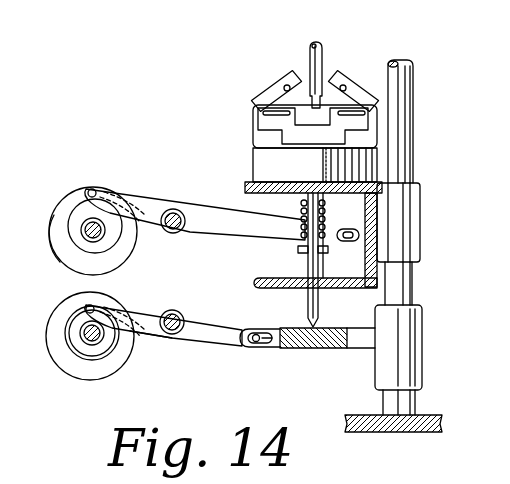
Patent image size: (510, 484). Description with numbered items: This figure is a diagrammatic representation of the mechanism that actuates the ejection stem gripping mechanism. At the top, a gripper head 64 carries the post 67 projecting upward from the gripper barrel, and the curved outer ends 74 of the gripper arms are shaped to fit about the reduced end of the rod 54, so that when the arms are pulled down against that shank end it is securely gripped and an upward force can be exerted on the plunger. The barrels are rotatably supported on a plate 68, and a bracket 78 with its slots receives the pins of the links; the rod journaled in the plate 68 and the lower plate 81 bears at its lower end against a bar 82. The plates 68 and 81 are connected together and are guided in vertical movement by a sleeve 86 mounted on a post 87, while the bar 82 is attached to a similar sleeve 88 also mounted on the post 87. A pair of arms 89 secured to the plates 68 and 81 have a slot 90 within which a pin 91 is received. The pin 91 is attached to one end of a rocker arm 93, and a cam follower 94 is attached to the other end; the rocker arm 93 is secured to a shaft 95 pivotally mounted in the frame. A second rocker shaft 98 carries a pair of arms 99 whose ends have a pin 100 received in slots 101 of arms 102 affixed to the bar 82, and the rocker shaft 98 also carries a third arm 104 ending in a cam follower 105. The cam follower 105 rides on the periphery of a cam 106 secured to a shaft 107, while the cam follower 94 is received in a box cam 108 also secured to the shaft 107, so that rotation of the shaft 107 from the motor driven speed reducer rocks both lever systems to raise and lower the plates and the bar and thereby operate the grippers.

The rod 54 is at (323, 58).
The gripper head 64 is at (266, 88).
The post 67 is at (254, 138).
The plate 68 is at (246, 186).
The outer end of arm 74 is at (297, 74).
The bracket 78 is at (348, 123).
The plate 81 is at (255, 283).
The bar 82 is at (330, 349).
The sleeve 86 is at (420, 237).
The post 87 is at (413, 282).
The sleeve 88 is at (423, 346).
The arm 89 is at (360, 230).
The slot 90 is at (348, 242).
The pin 91 is at (345, 229).
The rocker arm 93 is at (151, 206).
The cam follower 94 is at (94, 189).
The shaft 95 is at (170, 233).
The second rocker shaft 98 is at (170, 311).
The arm 99 is at (198, 341).
The pin 100 is at (263, 329).
The slot 101 is at (252, 346).
The arm 102 is at (273, 348).
The third arm 104 is at (147, 333).
The cam follower 105 is at (86, 305).
The cam 106 is at (68, 372).
The shaft 107 is at (81, 229).
The box cam 108 is at (70, 194).